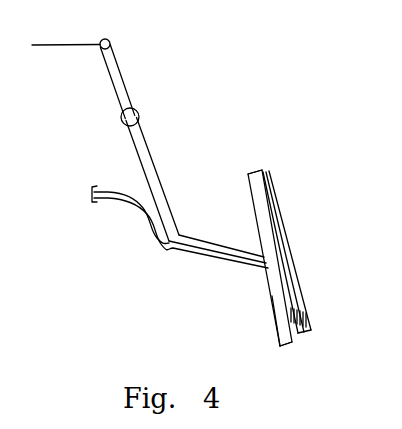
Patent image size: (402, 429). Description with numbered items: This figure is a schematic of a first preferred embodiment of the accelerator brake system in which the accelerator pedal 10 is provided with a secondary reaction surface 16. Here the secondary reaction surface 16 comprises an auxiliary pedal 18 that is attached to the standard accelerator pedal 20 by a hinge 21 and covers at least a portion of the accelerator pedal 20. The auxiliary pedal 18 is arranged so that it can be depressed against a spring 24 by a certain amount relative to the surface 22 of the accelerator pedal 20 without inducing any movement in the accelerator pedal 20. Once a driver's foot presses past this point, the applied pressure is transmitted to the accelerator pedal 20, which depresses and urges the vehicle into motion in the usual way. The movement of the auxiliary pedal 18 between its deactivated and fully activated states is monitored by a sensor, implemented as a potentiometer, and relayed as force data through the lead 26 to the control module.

The accelerator pedal 10 is at (310, 161).
The secondary reaction surface 16 is at (309, 235).
The auxiliary pedal 18 is at (311, 320).
The standard accelerator pedal 20 is at (272, 296).
The hinge 21 is at (258, 170).
The surface of accelerator pedal 22 is at (278, 268).
The spring 24 is at (305, 343).
The lead 26 is at (110, 199).